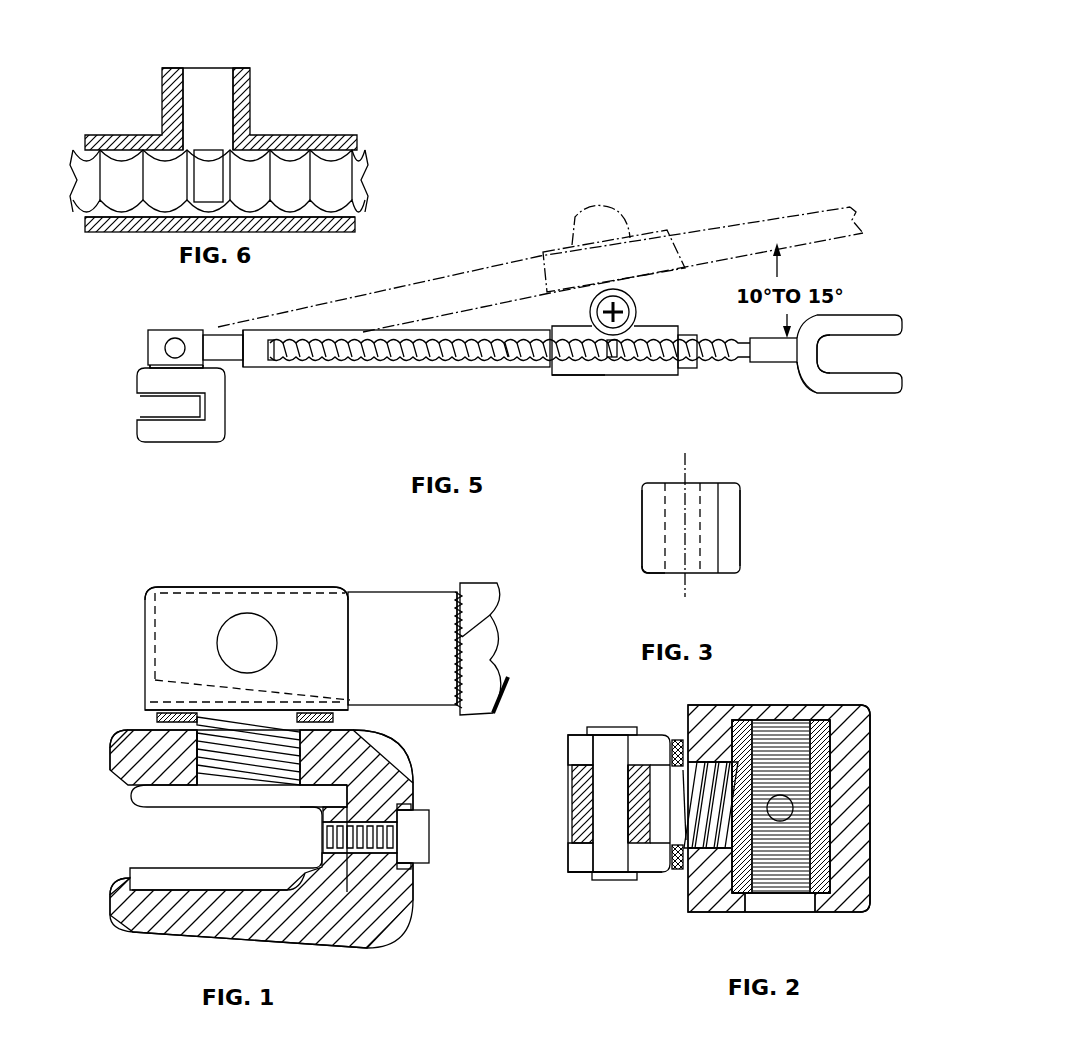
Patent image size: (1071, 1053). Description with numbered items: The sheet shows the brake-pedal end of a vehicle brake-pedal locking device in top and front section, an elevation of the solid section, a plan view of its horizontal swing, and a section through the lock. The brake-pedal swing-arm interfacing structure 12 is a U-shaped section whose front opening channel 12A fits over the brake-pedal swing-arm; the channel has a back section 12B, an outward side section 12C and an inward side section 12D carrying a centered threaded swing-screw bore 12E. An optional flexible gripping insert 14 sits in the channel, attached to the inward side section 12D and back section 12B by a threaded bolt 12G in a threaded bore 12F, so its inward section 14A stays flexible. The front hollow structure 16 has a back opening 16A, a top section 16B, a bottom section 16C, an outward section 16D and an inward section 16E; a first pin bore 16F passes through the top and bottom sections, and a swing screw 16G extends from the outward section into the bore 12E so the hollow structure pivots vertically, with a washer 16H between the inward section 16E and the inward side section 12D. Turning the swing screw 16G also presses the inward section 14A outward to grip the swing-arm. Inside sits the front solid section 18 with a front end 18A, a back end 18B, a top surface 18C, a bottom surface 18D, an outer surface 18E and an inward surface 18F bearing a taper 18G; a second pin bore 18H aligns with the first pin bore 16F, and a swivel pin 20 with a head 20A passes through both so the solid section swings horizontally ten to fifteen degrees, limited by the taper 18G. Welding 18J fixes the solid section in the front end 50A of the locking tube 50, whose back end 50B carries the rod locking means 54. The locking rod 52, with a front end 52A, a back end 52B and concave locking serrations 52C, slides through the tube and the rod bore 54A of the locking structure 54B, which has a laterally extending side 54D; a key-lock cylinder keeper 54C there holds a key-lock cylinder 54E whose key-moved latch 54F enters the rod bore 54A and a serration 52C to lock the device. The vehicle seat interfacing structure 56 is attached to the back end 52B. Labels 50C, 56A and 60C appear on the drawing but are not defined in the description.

In FIG. 5, the brake-pedal swing-arm interfacing structure 12 is at (208, 440).
In FIG. 1, the brake-pedal swing-arm interfacing structure 12 is at (430, 774).
In FIG. 2, the brake-pedal swing-arm interfacing structure 12 is at (636, 700).
In FIG. 5, the front opening channel 12A is at (165, 411).
In FIG. 1, the front opening channel 12A is at (178, 847).
In FIG. 2, the front opening channel 12A is at (780, 750).
In FIG. 1, the back section 12B is at (333, 870).
In FIG. 1, the outward side section 12C is at (365, 890).
In FIG. 2, the outward side section 12C is at (835, 760).
In FIG. 1, the inward side section 12D is at (411, 806).
In FIG. 2, the inward side section 12D is at (742, 895).
In FIG. 1, the threaded swing-screw bore 12E is at (390, 740).
In FIG. 2, the threaded swing-screw bore 12E is at (676, 748).
In FIG. 1, the threaded bore 12F is at (429, 825).
In FIG. 2, the threaded bore 12F is at (775, 830).
In FIG. 1, the threaded bolt 12G is at (420, 866).
In FIG. 2, the threaded bolt 12G is at (792, 902).
In FIG. 1, the flexible gripping insert 14 is at (175, 797).
In FIG. 2, the flexible gripping insert 14 is at (740, 722).
In FIG. 1, the inward section 14A is at (232, 808).
In FIG. 5, the front hollow structure 16 is at (180, 332).
In FIG. 1, the front hollow structure 16 is at (104, 552).
In FIG. 2, the front hollow structure 16 is at (619, 803).
In FIG. 1, the back opening 16A is at (400, 610).
In FIG. 1, the top section 16B is at (198, 600).
In FIG. 2, the top section 16B is at (578, 736).
In FIG. 2, the bottom section 16C is at (582, 872).
In FIG. 1, the outward section 16D is at (158, 587).
In FIG. 1, the inward section 16E is at (275, 715).
In FIG. 1, the first pin bore 16F is at (232, 614).
In FIG. 2, the first pin bore 16F is at (590, 852).
In FIG. 1, the swing screw 16G is at (194, 760).
In FIG. 2, the swing screw 16G is at (690, 820).
In FIG. 1, the washer 16H is at (115, 746).
In FIG. 2, the washer 16H is at (720, 830).
In FIG. 3, the front solid section 18 is at (650, 528).
In FIG. 1, the front solid section 18 is at (147, 600).
In FIG. 2, the front solid section 18 is at (585, 785).
In FIG. 3, the front end 18A is at (660, 540).
In FIG. 1, the front end 18A is at (155, 622).
In FIG. 1, the back end 18B is at (448, 600).
In FIG. 3, the top surface 18C is at (656, 483).
In FIG. 3, the bottom surface 18D is at (662, 578).
In FIG. 3, the outer surface 18E is at (642, 500).
In FIG. 1, the outer surface 18E is at (330, 700).
In FIG. 3, the inward surface 18F is at (720, 506).
In FIG. 3, the taper 18G is at (730, 563).
In FIG. 1, the taper 18G is at (165, 685).
In FIG. 2, the taper 18G is at (645, 810).
In FIG. 3, the second pin bore 18H is at (705, 483).
In FIG. 5, the welding 18J is at (242, 330).
In FIG. 1, the welding 18J is at (464, 606).
In FIG. 5, the swivel pin 20 is at (168, 351).
In FIG. 1, the swivel pin 20 is at (256, 633).
In FIG. 2, the swivel pin 20 is at (612, 740).
In FIG. 3, the head 20A is at (700, 573).
In FIG. 2, the head 20A is at (588, 880).
In FIG. 5, the locking tube 50 is at (372, 300).
In FIG. 1, the locking tube 50 is at (490, 622).
In FIG. 5, the front end 50A is at (246, 368).
In FIG. 1, the front end 50A is at (462, 660).
In FIG. 5, the back end 50B is at (790, 365).
In FIG. 1, the sleeve shoulder 50C is at (505, 680).
In FIG. 6, the locking rod 52 is at (355, 188).
In FIG. 5, the locking rod 52 is at (403, 360).
In FIG. 5, the front end 52A is at (283, 350).
In FIG. 5, the back end 52B is at (820, 375).
In FIG. 6, the locking serrations 52C is at (322, 162).
In FIG. 5, the locking serrations 52C is at (507, 360).
In FIG. 6, the rod locking means 54 is at (118, 60).
In FIG. 5, the rod locking means 54 is at (640, 248).
In FIG. 6, the rod bore 54A is at (95, 162).
In FIG. 5, the rod bore 54A is at (690, 370).
In FIG. 5, the locking structure 54B is at (586, 376).
In FIG. 6, the key-lock cylinder keeper 54C is at (245, 84).
In FIG. 5, the key-lock cylinder keeper 54C is at (637, 303).
In FIG. 5, the laterally extending side 54D is at (637, 316).
In FIG. 6, the key-lock cylinder 54E is at (200, 103).
In FIG. 5, the key-lock cylinder 54E is at (588, 238).
In FIG. 6, the key-moved latch 54F is at (206, 172).
In FIG. 5, the key-moved latch 54F is at (612, 360).
In FIG. 5, the vehicle seat interfacing structure 56 is at (876, 325).
In FIG. 5, the fork slot 56A is at (878, 330).
In FIG. 6, the plate edge 60C is at (118, 200).